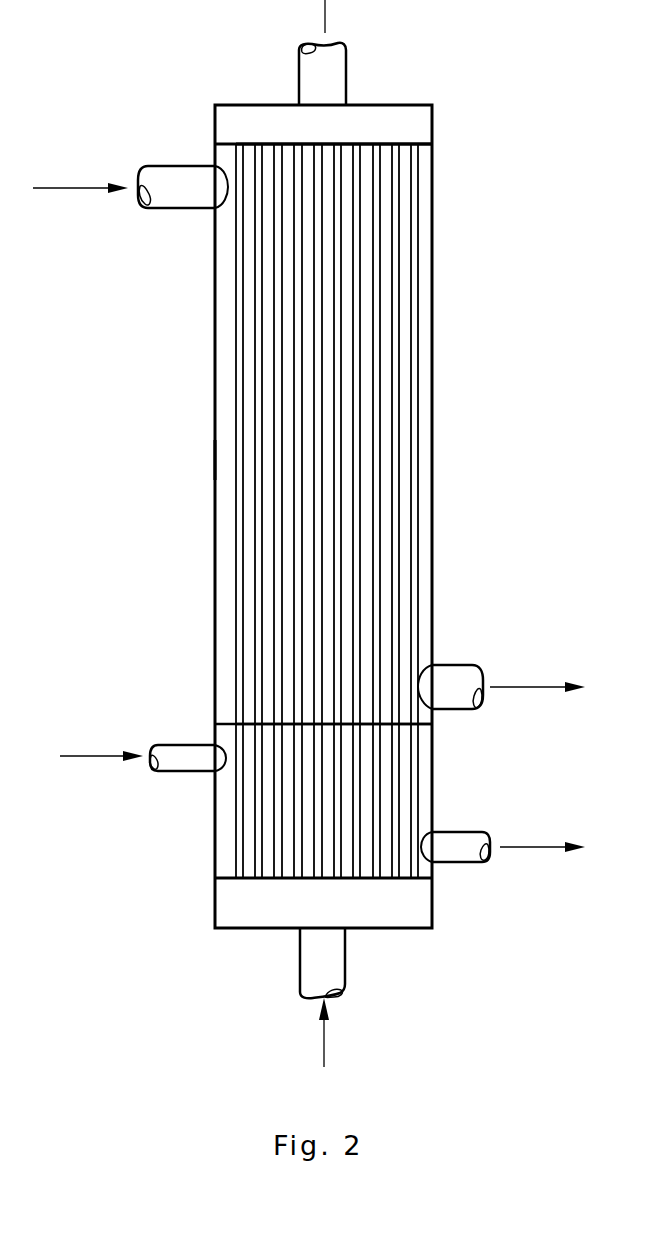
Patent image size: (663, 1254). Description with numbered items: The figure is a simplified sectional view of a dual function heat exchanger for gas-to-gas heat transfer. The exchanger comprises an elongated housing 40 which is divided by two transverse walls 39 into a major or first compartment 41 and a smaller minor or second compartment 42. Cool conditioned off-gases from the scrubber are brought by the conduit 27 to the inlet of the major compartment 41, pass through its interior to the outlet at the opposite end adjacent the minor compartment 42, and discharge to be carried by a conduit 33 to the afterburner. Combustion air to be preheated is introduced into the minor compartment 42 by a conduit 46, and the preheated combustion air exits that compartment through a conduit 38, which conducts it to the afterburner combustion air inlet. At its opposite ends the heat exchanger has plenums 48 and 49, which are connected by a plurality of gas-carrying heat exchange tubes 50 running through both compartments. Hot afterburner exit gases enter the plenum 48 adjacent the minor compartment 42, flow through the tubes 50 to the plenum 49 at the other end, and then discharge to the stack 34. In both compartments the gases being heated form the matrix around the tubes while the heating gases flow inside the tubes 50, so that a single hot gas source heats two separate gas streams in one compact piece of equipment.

The conduit 27 is at (157, 172).
The conduit 33 is at (468, 665).
The stack 34 is at (338, 73).
The conduit 38 is at (468, 853).
The transverse walls 39 is at (417, 145).
The elongated housing 40 is at (200, 460).
The major or first compartment 41 is at (423, 300).
The minor or second compartment 42 is at (230, 808).
The conduit 46 is at (175, 750).
The plenum 48 is at (228, 898).
The plenum 49 is at (425, 123).
The heat exchange tubes 50 is at (365, 468).